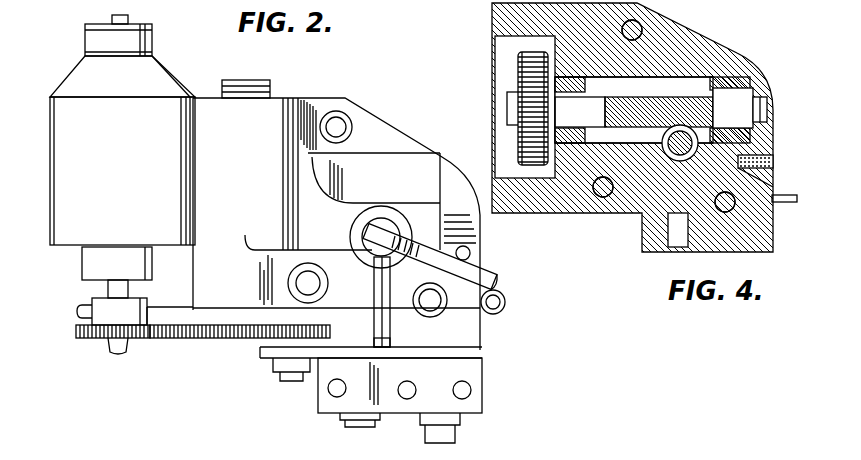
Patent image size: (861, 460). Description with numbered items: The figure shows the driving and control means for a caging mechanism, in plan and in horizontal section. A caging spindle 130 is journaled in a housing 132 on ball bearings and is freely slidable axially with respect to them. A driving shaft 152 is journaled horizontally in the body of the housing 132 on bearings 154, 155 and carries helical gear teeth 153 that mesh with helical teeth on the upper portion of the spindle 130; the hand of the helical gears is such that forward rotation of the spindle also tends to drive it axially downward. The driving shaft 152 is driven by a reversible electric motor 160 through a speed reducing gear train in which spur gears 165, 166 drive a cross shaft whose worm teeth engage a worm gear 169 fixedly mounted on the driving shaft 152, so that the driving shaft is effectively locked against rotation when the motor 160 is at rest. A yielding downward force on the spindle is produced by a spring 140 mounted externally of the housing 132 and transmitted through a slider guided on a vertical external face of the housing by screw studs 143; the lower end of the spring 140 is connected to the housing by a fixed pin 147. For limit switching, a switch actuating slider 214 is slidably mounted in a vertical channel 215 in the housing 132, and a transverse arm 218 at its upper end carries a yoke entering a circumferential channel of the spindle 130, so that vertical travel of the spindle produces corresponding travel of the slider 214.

In FIG. 2, the caging spindle 130 is at (387, 226).
In FIG. 4, the caging spindle 130 is at (738, 154).
In FIG. 2, the housing 132 is at (303, 90).
In FIG. 4, the housing 132 is at (617, 222).
In FIG. 2, the spring 140 is at (506, 302).
In FIG. 2, the screw studs 143 is at (470, 251).
In FIG. 4, the fixed pin 147 is at (780, 203).
In FIG. 4, the driving shaft 152 is at (745, 107).
In FIG. 4, the helical gear teeth 153 is at (666, 95).
In FIG. 4, the bearing 154 is at (578, 85).
In FIG. 4, the bearing 155 is at (738, 78).
In FIG. 2, the reversible electric motor 160 is at (58, 155).
In FIG. 2, the spur gear 165 is at (90, 341).
In FIG. 2, the spur gear 166 is at (193, 341).
In FIG. 4, the worm gear 169 is at (520, 70).
In FIG. 2, the switch actuating slider 214 is at (388, 328).
In FIG. 2, the vertical channel 215 is at (378, 340).
In FIG. 4, the vertical channel 215 is at (672, 249).
In FIG. 2, the transverse arm 218 is at (377, 264).